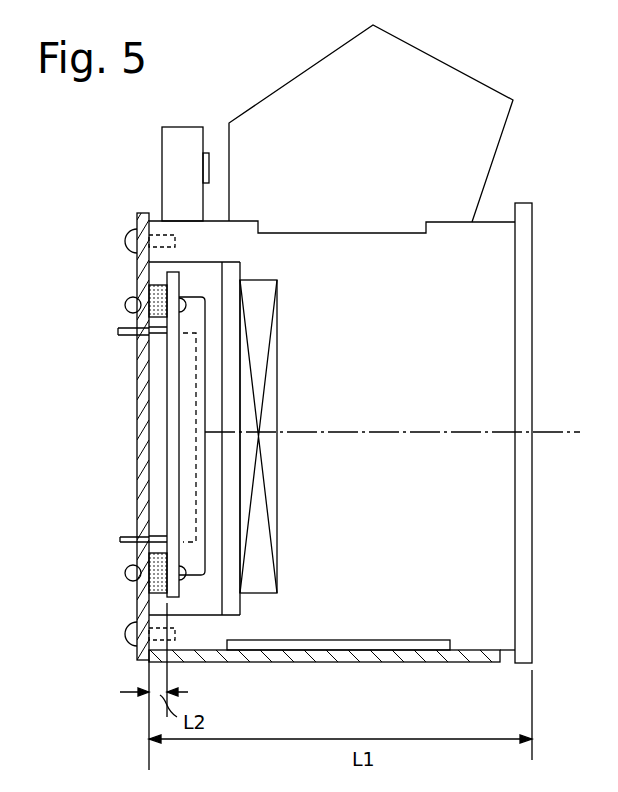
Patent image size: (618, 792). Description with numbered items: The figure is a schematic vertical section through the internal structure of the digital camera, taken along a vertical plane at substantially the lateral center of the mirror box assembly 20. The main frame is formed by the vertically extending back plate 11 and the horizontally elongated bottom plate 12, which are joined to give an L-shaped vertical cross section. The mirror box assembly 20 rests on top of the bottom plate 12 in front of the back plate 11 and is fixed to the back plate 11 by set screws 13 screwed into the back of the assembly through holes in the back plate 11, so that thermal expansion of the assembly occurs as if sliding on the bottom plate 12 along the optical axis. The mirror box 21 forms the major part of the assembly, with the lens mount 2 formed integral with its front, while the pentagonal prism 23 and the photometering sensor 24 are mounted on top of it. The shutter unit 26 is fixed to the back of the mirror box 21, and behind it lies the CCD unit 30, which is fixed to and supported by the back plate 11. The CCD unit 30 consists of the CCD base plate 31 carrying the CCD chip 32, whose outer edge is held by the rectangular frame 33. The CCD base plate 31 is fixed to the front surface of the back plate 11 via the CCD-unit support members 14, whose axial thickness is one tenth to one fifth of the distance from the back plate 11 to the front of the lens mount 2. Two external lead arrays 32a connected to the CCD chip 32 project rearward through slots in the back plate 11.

The lens mount 2 is at (525, 358).
The back plate 11 is at (137, 450).
The bottom plate 12 is at (422, 655).
The set screws 13 is at (128, 245).
The CCD-unit support members 14 is at (130, 315).
The mirror box assembly 20 is at (493, 197).
The mirror box 21 is at (493, 572).
The pentagonal prism 23 is at (480, 113).
The photometering sensor 24 is at (210, 165).
The shutter unit 26 is at (260, 530).
The CCD unit 30 is at (170, 468).
The CCD base plate 31 is at (177, 352).
The CCD chip 32 is at (190, 411).
The external lead arrays 32a is at (118, 336).
The rectangular frame 33 is at (193, 313).